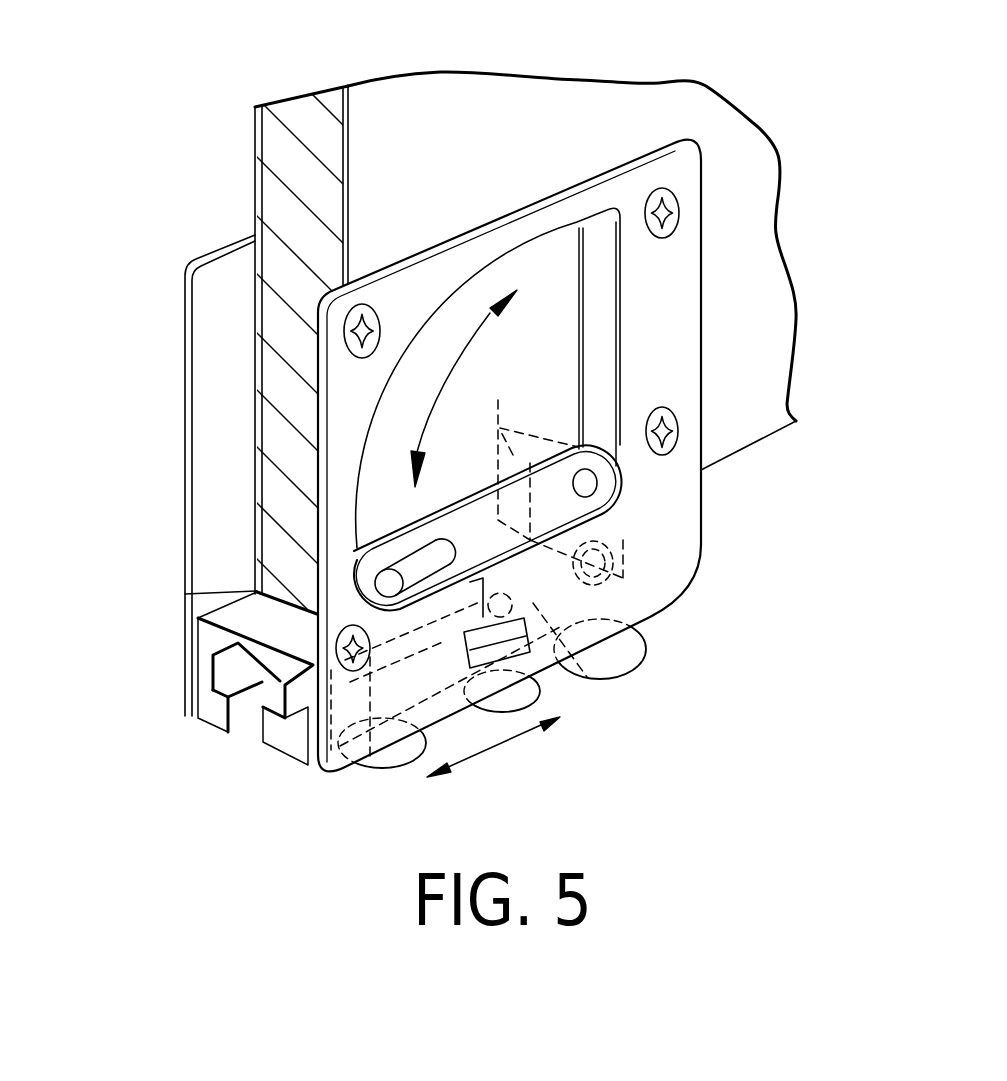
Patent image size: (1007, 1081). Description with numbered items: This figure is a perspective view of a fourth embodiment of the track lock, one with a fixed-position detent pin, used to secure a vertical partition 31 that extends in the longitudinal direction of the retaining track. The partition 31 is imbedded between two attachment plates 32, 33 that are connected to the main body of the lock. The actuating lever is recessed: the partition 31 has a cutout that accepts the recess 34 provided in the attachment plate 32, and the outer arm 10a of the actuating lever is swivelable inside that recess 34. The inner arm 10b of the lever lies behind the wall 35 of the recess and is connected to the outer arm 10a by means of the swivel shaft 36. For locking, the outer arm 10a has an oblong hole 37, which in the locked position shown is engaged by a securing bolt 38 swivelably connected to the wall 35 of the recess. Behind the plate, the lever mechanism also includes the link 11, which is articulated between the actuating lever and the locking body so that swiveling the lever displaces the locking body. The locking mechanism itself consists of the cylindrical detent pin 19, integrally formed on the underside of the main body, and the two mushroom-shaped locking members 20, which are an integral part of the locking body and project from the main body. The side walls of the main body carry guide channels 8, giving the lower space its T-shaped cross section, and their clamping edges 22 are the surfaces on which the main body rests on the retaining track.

The guide channels 8 is at (223, 672).
The outer arm 10a is at (463, 531).
The inner arm 10b is at (512, 455).
The link 11 is at (573, 657).
The detent pin 19 is at (613, 650).
The locking members 20 is at (387, 767).
The clamping edges 22 is at (210, 723).
The vertical partition 31 is at (643, 97).
The attachment plate 32 is at (663, 550).
The attachment plate 33 is at (183, 327).
The recess 34 is at (597, 393).
The wall of the recess 35 is at (557, 290).
The swivel shaft 36 is at (590, 483).
The oblong hole 37 is at (478, 581).
The securing bolt 38 is at (393, 585).